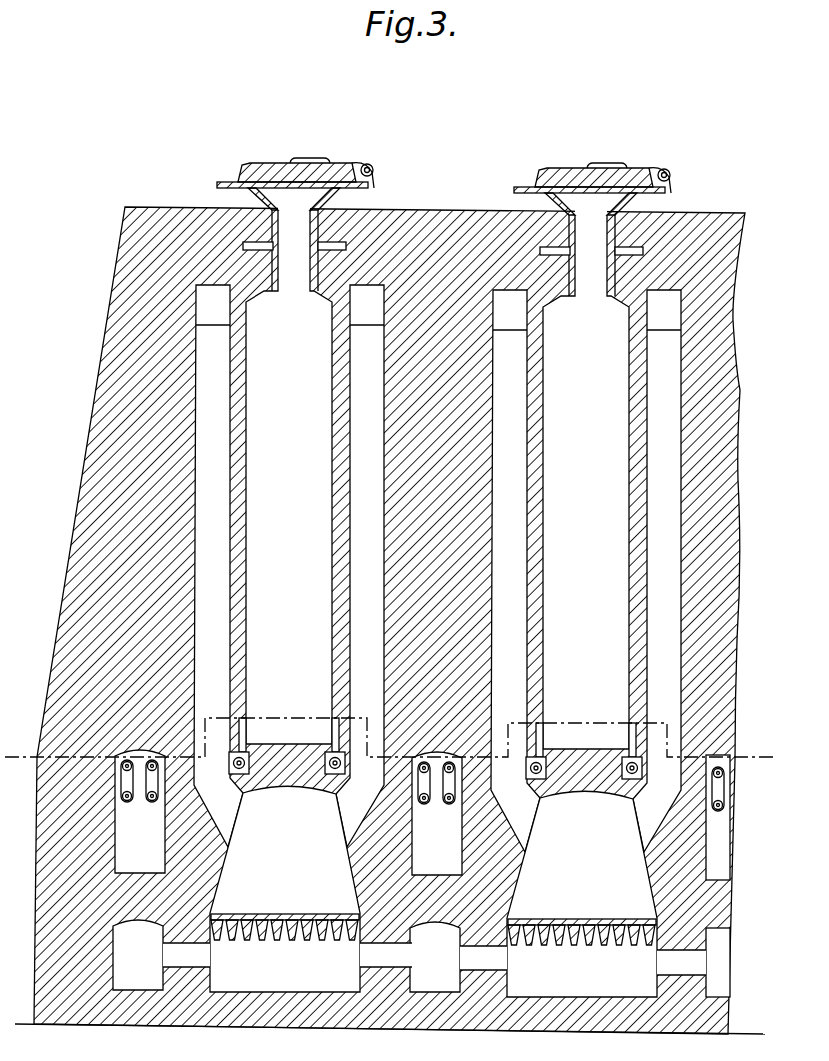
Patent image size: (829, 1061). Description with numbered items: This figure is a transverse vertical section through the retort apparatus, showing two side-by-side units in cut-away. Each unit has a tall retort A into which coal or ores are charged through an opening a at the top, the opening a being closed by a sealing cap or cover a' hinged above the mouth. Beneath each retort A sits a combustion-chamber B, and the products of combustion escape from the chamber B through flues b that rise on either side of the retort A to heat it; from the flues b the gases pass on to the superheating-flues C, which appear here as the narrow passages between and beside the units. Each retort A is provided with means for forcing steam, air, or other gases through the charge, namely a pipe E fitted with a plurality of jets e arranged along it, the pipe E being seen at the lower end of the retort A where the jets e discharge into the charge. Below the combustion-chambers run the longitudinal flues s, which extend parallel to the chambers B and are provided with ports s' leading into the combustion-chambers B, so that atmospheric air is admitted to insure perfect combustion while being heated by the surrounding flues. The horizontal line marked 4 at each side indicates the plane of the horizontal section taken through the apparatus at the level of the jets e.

The retort A is at (437, 472).
The opening a is at (443, 253).
The sealing cap a' is at (444, 174).
The flue b is at (437, 568).
The combustion-chamber B is at (433, 891).
The jet e is at (624, 737).
The pipe E is at (542, 773).
The superheating-flue C is at (736, 846).
The longitudinal flue s is at (421, 958).
The port s' is at (434, 958).
The section line 4 4 is at (398, 744).